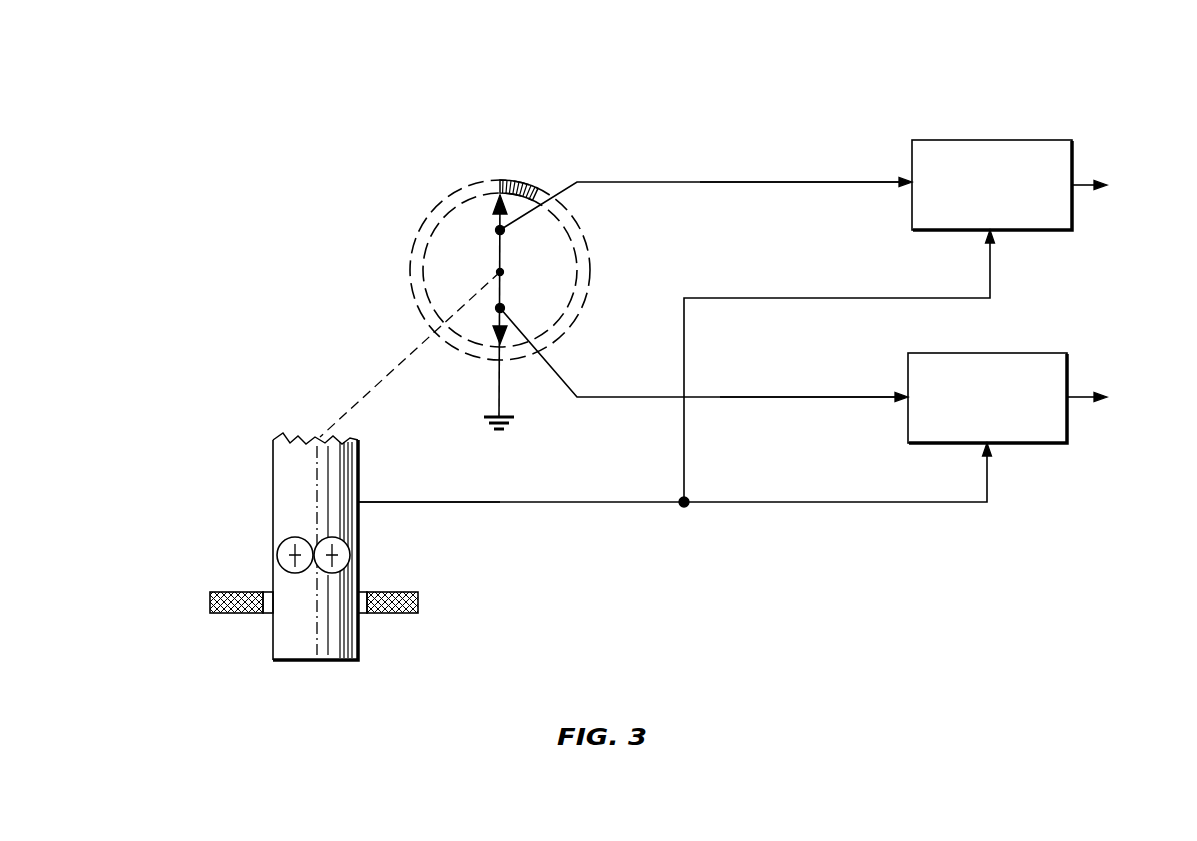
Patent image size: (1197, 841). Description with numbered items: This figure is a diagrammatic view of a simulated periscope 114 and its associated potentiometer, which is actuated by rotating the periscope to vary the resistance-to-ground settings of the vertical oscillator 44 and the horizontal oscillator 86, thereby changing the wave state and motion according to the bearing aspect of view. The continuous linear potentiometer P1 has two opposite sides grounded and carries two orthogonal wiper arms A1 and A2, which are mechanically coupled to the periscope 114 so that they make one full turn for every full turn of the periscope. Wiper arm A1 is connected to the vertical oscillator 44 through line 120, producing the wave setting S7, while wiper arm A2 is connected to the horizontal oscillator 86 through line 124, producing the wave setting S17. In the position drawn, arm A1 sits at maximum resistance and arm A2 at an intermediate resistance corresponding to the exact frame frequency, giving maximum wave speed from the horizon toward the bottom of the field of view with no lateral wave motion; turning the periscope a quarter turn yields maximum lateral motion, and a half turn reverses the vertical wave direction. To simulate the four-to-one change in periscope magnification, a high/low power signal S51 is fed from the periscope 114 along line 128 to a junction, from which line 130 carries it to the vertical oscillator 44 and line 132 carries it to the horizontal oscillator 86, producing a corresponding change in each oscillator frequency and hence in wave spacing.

The vertical oscillator means 44 is at (981, 140).
The horizontal oscillator means 86 is at (968, 353).
The simulated periscope 114 is at (273, 495).
The line 120 is at (659, 182).
The line 124 is at (550, 369).
The line 128 is at (622, 502).
The line 130 is at (686, 432).
The line 132 is at (772, 502).
The continuous linear potentiometer P1 is at (457, 190).
The wiper arm A1 is at (497, 252).
The wiper arm A2 is at (503, 294).
The wave setting S7 is at (800, 162).
The wave setting S17 is at (808, 370).
The high/low power signal S51 is at (490, 502).